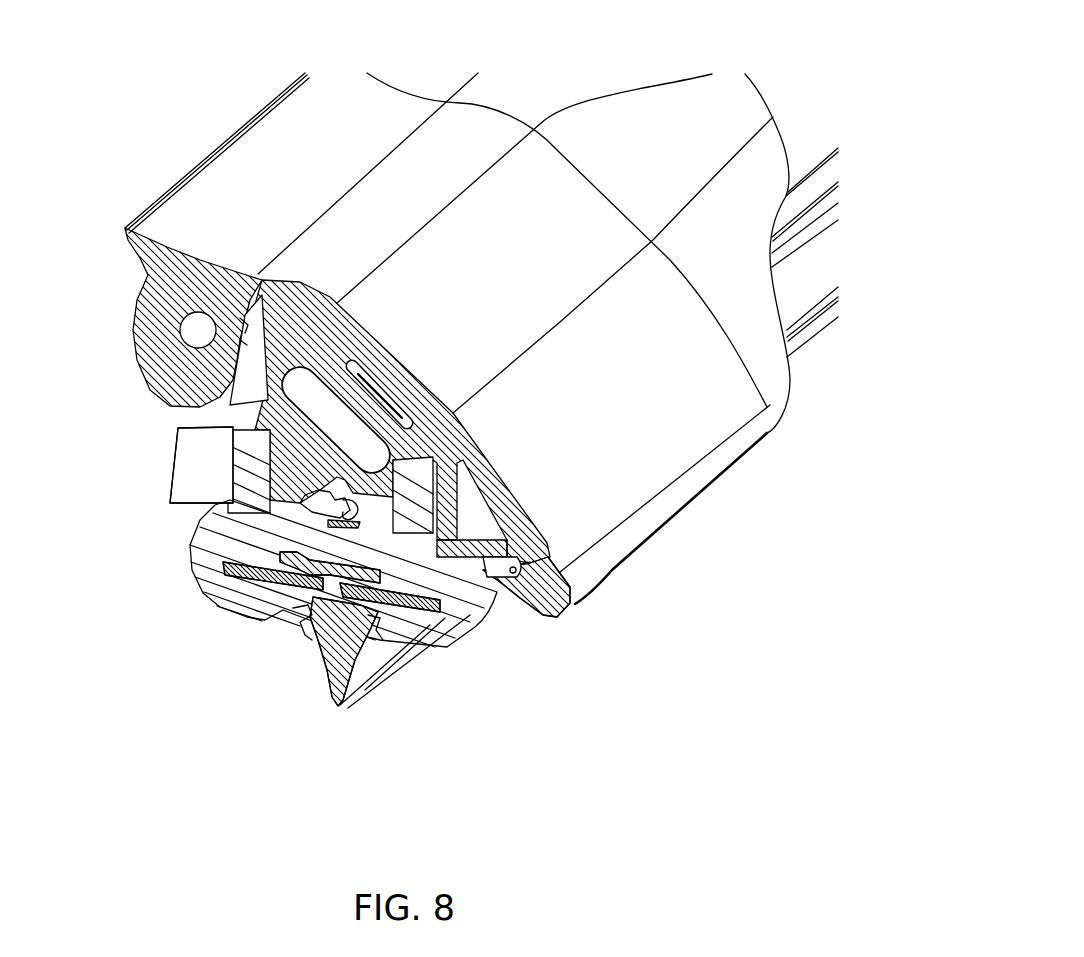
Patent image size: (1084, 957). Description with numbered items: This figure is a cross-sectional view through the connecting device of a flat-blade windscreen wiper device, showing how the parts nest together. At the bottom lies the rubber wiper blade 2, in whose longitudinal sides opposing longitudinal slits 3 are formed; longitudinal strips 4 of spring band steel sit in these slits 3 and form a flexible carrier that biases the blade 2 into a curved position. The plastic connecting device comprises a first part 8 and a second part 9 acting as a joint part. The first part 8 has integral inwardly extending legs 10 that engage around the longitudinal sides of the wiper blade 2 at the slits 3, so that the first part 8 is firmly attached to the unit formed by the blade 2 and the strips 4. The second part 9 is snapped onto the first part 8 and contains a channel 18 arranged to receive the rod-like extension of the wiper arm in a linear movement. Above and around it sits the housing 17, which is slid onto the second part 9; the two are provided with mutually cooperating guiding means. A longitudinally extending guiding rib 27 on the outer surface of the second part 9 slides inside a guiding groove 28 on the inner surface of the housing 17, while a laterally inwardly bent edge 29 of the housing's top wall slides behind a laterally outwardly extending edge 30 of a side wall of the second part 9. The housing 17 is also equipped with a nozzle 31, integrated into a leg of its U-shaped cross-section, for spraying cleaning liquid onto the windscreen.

The wiper blade 2 is at (367, 670).
The longitudinal slits 3 is at (358, 605).
The longitudinal strips 4 is at (237, 573).
The first part 8 is at (200, 542).
The second part 9 is at (410, 422).
The legs 10 is at (253, 597).
The housing 17 is at (288, 142).
The channel 18 is at (335, 413).
The guiding rib 27 is at (238, 285).
The guiding groove 28 is at (243, 315).
The laterally inwardly bent edge 29 is at (503, 583).
The laterally outwardly extending edge 30 is at (560, 575).
The nozzle 31 is at (197, 328).